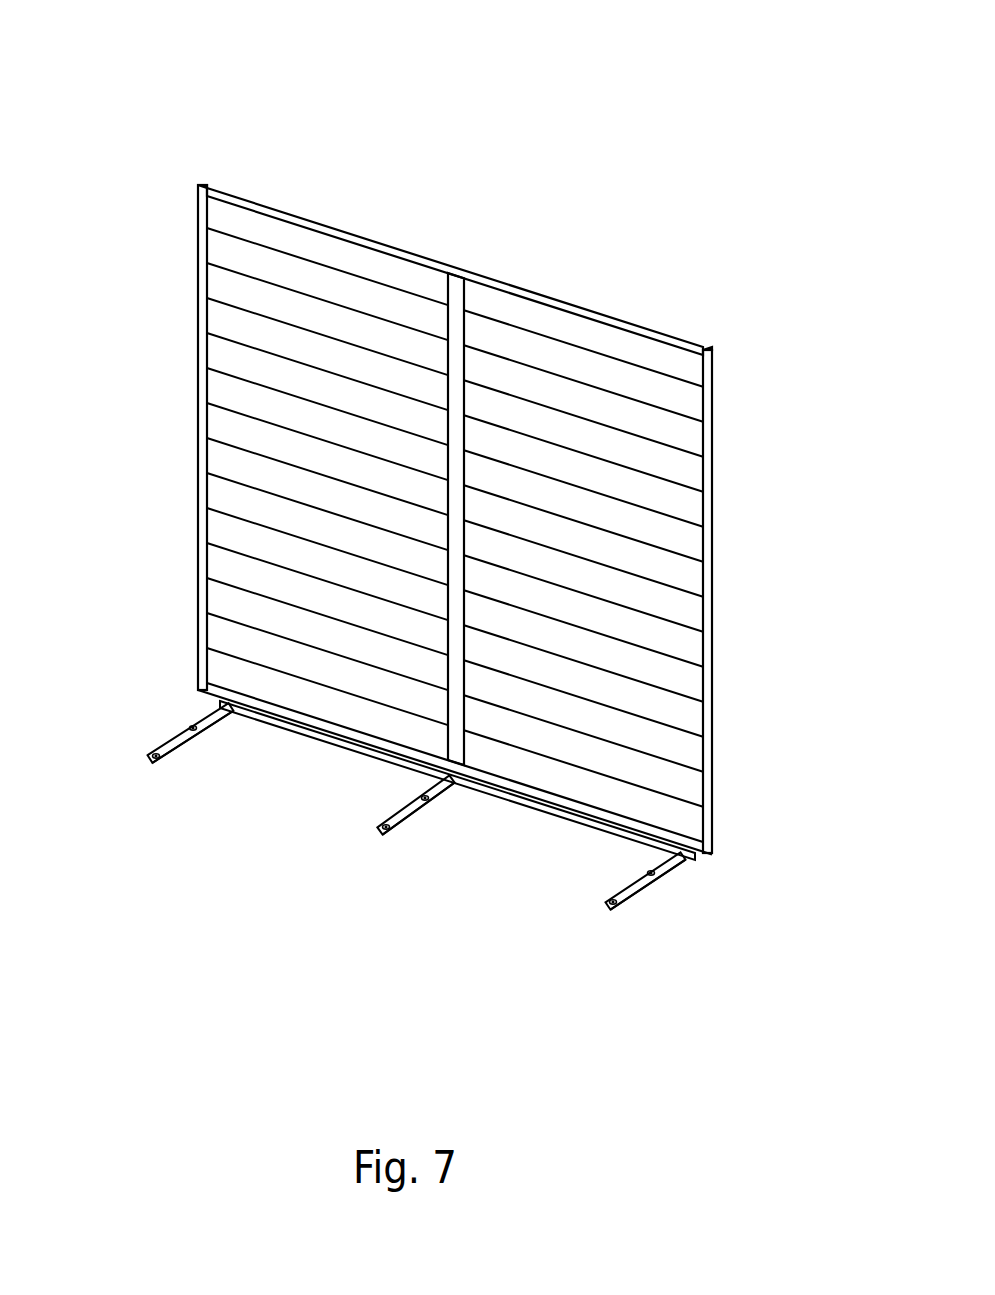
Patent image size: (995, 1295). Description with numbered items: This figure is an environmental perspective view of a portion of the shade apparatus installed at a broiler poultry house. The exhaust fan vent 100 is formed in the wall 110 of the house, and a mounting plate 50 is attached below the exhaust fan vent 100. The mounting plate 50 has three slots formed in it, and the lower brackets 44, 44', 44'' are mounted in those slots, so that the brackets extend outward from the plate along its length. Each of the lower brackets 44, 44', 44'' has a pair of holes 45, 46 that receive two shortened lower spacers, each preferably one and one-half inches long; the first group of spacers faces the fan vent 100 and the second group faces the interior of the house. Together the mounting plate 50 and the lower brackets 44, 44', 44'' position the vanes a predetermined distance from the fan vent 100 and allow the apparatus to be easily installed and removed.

The wall 110 is at (407, 197).
The exhaust fan vent 100 is at (620, 512).
The mounting plate 50 is at (300, 733).
The lower bracket 44 is at (147, 712).
The lower bracket 44' is at (415, 860).
The lower bracket 44'' is at (671, 912).
The hole 45 is at (203, 732).
The hole 46 is at (148, 756).